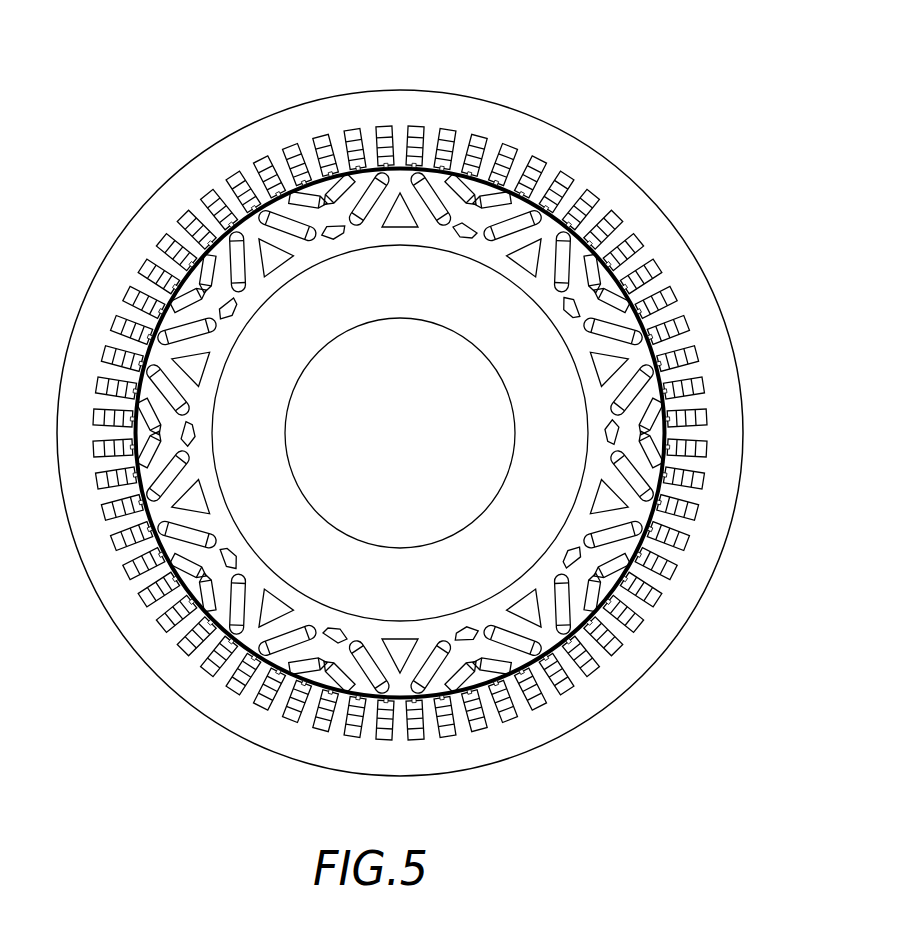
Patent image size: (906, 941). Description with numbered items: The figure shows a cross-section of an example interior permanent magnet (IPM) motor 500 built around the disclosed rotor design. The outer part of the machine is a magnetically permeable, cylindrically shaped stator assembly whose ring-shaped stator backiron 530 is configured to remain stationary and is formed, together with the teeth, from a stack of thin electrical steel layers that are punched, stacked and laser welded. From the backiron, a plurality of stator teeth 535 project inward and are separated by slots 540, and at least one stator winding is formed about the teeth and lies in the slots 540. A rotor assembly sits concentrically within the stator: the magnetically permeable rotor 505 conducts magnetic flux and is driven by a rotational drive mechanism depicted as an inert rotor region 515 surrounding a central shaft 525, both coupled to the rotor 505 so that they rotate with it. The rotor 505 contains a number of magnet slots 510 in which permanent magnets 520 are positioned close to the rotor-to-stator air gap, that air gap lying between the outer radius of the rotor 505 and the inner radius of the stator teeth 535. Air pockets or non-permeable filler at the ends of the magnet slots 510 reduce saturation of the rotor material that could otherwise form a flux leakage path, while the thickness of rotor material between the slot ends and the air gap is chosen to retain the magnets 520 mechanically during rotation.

The IPM motor 500 is at (153, 68).
The rotor 505 is at (235, 221).
The slots 510 is at (157, 333).
The inert rotor region 515 is at (262, 424).
The permanent magnets 520 is at (205, 552).
The shaft 525 is at (343, 480).
The stator backiron 530 is at (704, 317).
The stator teeth 535 is at (713, 429).
The slots 540 is at (706, 506).